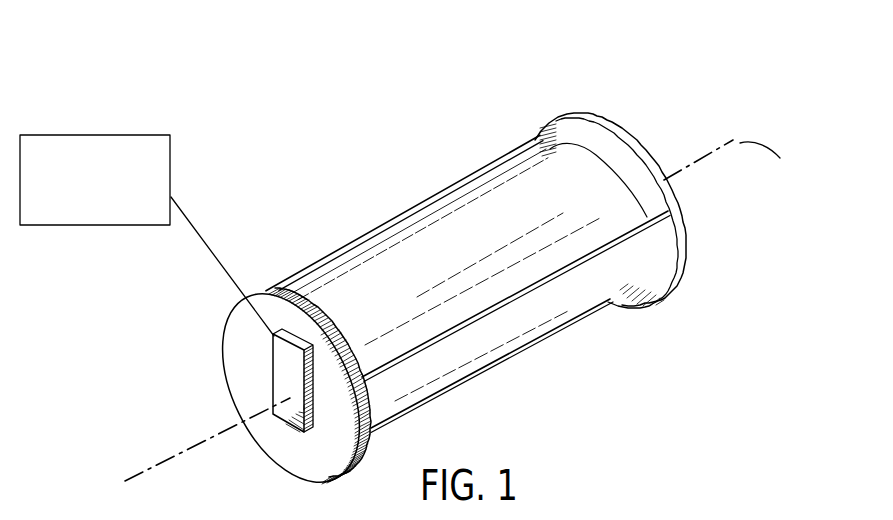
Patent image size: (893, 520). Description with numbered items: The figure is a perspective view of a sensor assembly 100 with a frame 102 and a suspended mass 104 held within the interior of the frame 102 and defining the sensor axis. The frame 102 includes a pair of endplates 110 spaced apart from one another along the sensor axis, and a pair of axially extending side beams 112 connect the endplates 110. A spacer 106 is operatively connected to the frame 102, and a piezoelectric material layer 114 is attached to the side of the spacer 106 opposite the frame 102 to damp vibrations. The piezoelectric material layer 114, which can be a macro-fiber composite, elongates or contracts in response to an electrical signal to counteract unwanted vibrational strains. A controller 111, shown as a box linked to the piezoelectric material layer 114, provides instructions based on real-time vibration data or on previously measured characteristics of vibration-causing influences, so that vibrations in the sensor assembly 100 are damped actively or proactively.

The sensor assembly 100 is at (421, 256).
The frame 102 is at (266, 287).
The suspended mass 104 is at (497, 219).
The spacer 106 is at (309, 351).
The endplates 110 is at (637, 147).
The controller 111 is at (147, 235).
The side beams 112 is at (427, 196).
The piezoelectric material layer 114 is at (282, 367).